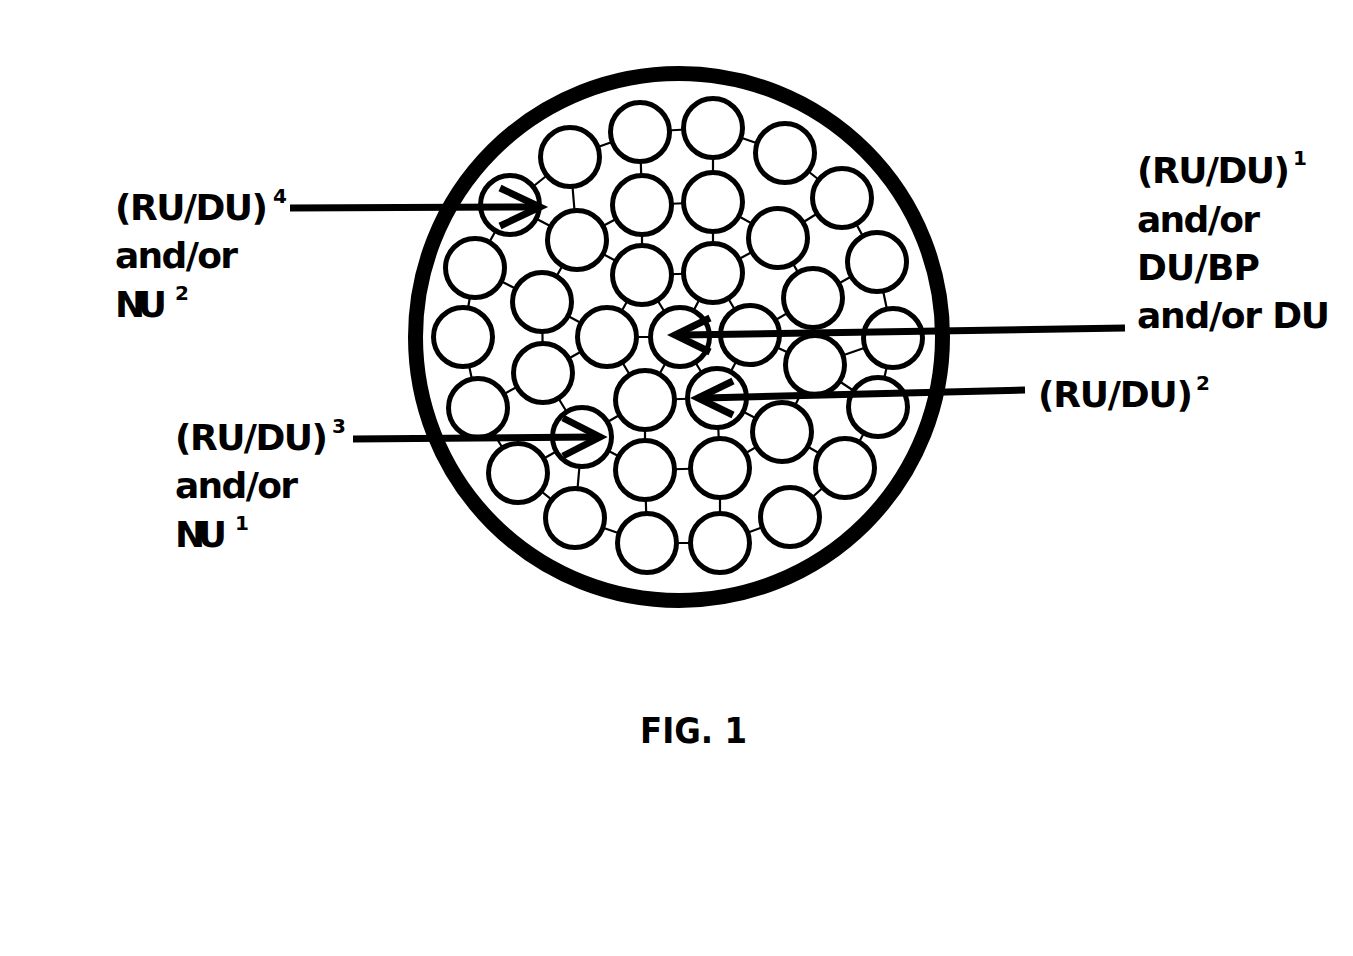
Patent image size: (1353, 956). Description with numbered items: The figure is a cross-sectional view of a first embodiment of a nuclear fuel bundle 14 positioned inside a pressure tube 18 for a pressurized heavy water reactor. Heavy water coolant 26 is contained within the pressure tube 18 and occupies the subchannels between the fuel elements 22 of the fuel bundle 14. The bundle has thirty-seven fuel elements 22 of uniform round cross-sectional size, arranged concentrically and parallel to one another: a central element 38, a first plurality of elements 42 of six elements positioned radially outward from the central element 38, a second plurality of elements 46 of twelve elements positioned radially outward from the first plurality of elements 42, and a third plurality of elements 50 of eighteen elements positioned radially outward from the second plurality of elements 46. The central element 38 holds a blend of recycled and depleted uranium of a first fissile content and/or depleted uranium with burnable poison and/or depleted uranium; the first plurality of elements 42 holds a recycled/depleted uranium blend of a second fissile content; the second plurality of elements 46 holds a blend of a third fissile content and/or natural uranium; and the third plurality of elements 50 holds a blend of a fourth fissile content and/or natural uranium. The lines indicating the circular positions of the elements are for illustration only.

The fuel bundle 14 is at (640, 325).
The pressure tube 18 is at (750, 76).
The fuel elements 22 is at (647, 207).
The heavy water coolant 26 is at (827, 155).
The central element 38 is at (693, 297).
The first plurality of elements 42 is at (837, 557).
The second plurality of elements 46 is at (530, 560).
The third plurality of elements 50 is at (470, 300).